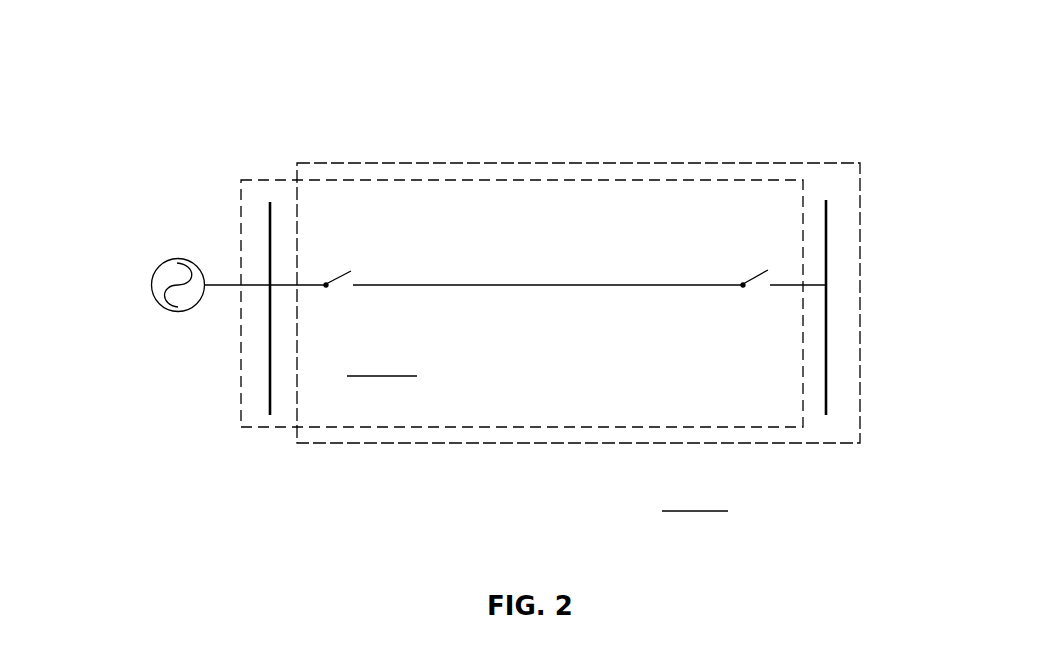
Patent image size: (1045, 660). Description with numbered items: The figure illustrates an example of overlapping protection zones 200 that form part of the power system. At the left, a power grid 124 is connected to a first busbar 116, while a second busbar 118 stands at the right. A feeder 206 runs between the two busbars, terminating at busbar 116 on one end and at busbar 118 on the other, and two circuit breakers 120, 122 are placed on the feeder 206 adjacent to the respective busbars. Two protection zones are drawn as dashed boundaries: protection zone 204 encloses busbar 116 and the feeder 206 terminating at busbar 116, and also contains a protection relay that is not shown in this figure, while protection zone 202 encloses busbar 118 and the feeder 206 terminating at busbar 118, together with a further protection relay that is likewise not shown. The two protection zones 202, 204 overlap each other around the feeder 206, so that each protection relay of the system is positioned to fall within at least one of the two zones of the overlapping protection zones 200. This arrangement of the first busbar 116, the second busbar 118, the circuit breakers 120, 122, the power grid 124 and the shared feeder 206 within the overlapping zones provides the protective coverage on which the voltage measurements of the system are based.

The first busbar 116 is at (270, 100).
The second busbar 118 is at (832, 100).
The circuit breaker 120 is at (327, 282).
The circuit breaker 122 is at (746, 282).
The power grid 124 is at (151, 276).
The overlapping protection zones 200 is at (241, 372).
The protection zone 202 is at (547, 460).
The protection zone 204 is at (495, 178).
The feeder 206 is at (553, 290).